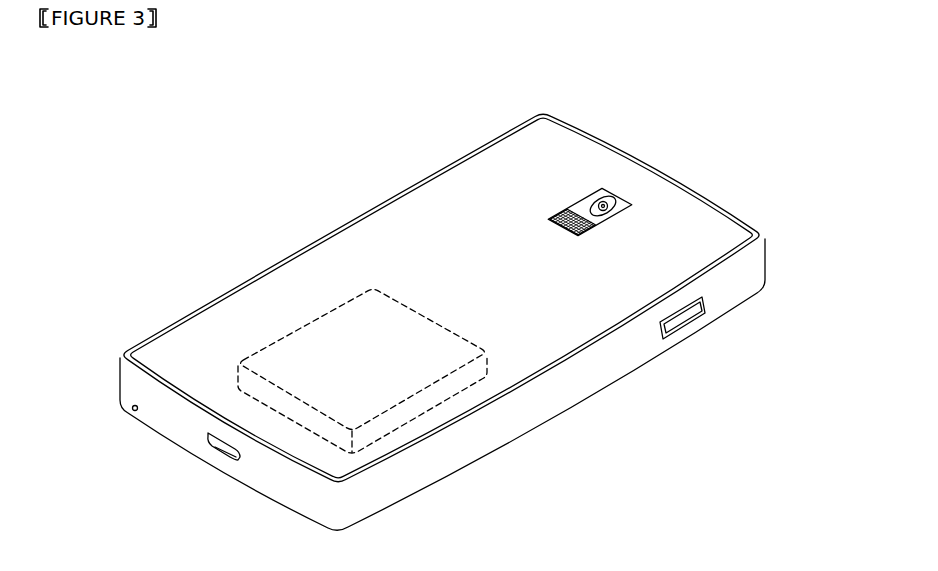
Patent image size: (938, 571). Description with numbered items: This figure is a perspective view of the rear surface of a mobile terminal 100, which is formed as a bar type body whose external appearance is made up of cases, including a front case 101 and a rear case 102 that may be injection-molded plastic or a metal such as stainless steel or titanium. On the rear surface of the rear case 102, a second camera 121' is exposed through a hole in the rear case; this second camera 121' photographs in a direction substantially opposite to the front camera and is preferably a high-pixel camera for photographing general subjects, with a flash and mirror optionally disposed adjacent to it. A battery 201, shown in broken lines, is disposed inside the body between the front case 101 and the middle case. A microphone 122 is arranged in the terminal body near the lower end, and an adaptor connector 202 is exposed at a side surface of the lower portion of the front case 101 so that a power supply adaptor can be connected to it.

The mobile terminal 100 is at (410, 172).
The front case 101 is at (764, 280).
The rear case 102 is at (767, 237).
The second camera 121' is at (632, 170).
The microphone 122 is at (129, 412).
The battery 201 is at (308, 322).
The adaptor connector 202 is at (220, 447).